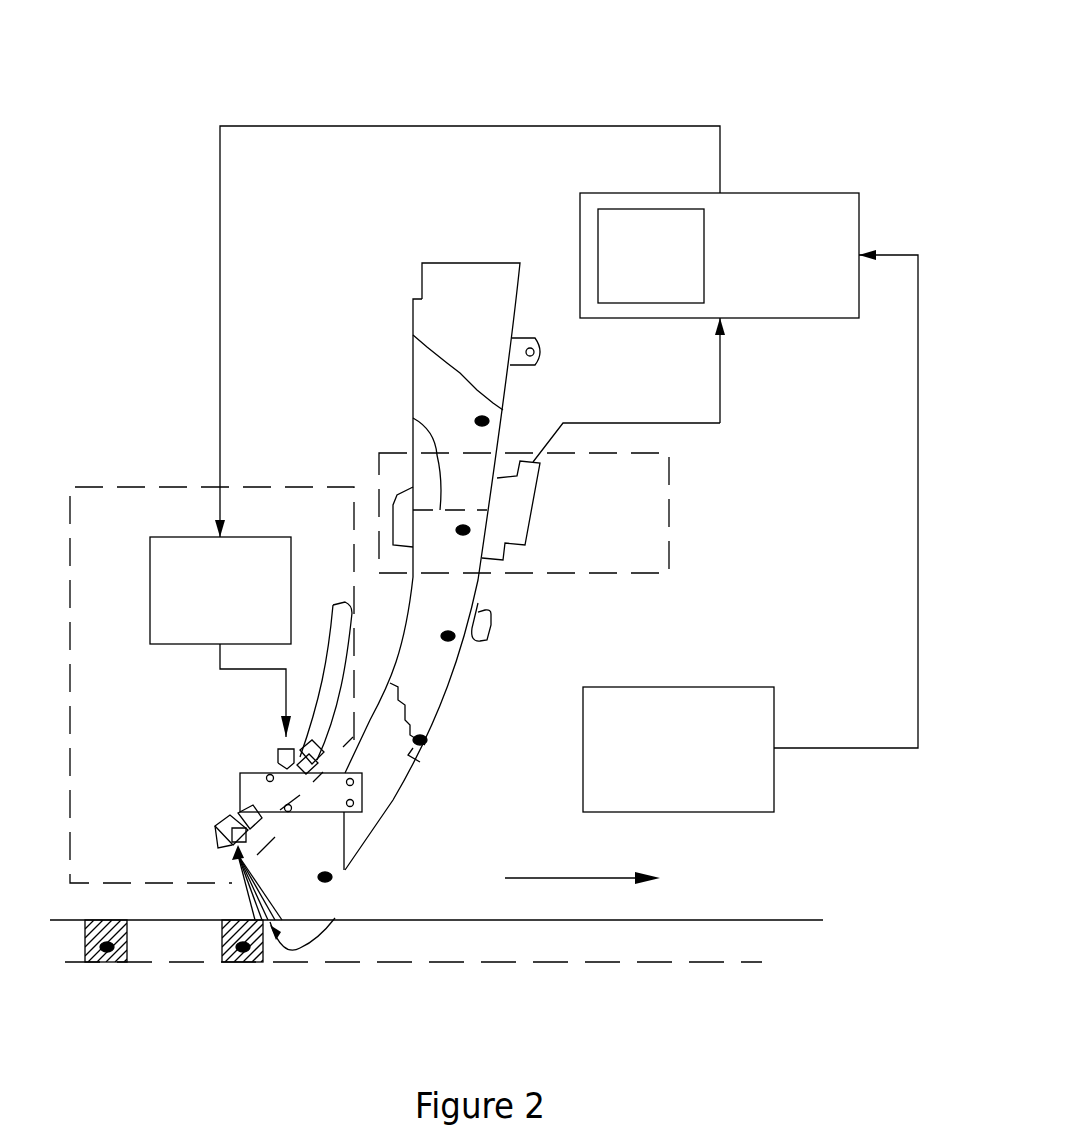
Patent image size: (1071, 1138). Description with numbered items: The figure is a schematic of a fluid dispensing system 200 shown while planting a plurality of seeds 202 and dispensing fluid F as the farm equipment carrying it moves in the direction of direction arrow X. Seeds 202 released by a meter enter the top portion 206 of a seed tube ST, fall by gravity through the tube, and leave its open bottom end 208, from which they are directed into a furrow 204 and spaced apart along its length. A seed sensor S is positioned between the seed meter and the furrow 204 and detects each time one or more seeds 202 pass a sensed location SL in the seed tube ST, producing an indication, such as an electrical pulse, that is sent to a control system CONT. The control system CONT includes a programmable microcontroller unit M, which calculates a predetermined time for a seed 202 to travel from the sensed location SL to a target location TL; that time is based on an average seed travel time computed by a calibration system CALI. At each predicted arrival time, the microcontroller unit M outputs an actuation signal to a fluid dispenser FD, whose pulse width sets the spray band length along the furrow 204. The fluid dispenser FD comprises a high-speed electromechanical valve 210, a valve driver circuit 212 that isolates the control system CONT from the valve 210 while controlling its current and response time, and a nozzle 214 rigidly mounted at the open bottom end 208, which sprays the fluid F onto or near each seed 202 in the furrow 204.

The fluid dispensing system 200 is at (188, 78).
The seeds 202 is at (495, 414).
The furrow 204 is at (591, 962).
The top portion 206 is at (498, 262).
The open bottom end 208 is at (343, 843).
The high-speed electromechanical valve 210 is at (278, 763).
The valve driver circuit 212 is at (240, 782).
The nozzle 214 is at (212, 834).
The seed sensor S is at (537, 478).
The programmable microcontroller unit M is at (622, 209).
The control system CONT is at (859, 193).
The calibration system CALI is at (775, 813).
The fluid dispenser FD is at (96, 485).
The seed tube ST is at (413, 317).
The sensed location SL is at (413, 418).
The fluid F is at (85, 942).
The target location TL is at (308, 920).
The direction arrow X is at (534, 877).